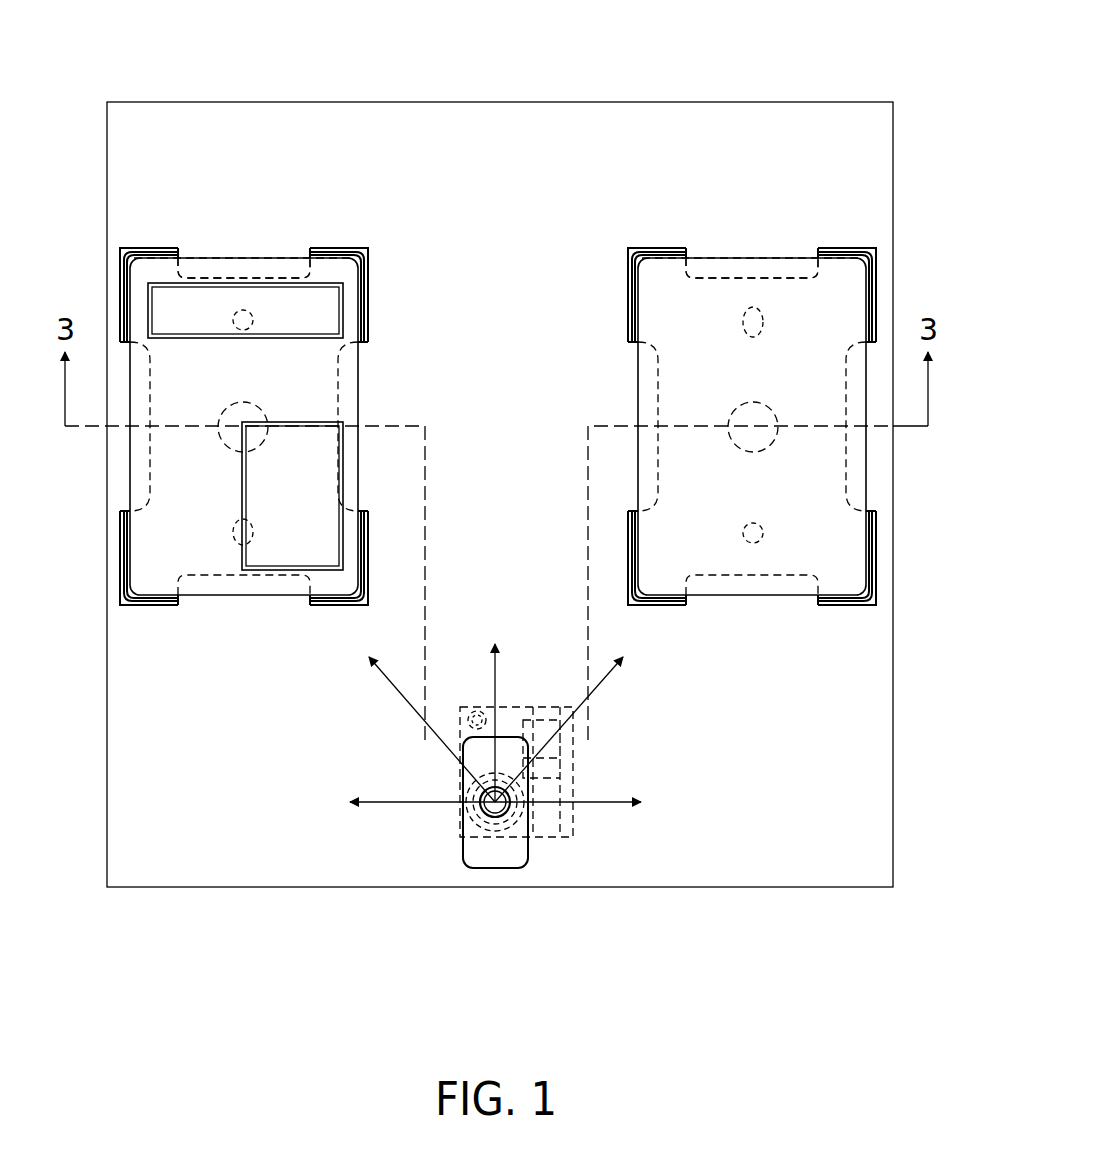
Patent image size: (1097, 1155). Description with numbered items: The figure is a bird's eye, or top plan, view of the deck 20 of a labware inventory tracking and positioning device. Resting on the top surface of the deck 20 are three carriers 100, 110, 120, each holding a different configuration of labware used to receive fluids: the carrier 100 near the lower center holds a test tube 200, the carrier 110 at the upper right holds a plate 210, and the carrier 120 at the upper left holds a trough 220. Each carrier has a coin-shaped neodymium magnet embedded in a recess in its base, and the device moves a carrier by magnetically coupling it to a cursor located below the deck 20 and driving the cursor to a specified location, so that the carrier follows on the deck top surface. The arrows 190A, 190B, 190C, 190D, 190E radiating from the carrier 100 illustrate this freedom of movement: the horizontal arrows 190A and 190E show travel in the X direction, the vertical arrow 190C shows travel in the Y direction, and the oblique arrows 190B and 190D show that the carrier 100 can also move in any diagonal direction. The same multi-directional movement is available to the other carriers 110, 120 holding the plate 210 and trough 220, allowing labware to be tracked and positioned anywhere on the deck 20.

The deck 20 is at (857, 120).
The carrier 100 is at (472, 852).
The carrier 110 is at (877, 250).
The carrier 120 is at (130, 256).
The tube 200 is at (510, 823).
The plate 210 is at (753, 258).
The trough 220 is at (242, 258).
The arrow 190A is at (378, 802).
The arrow 190B is at (392, 685).
The arrow 190C is at (495, 674).
The arrow 190D is at (603, 683).
The arrow 190E is at (617, 805).